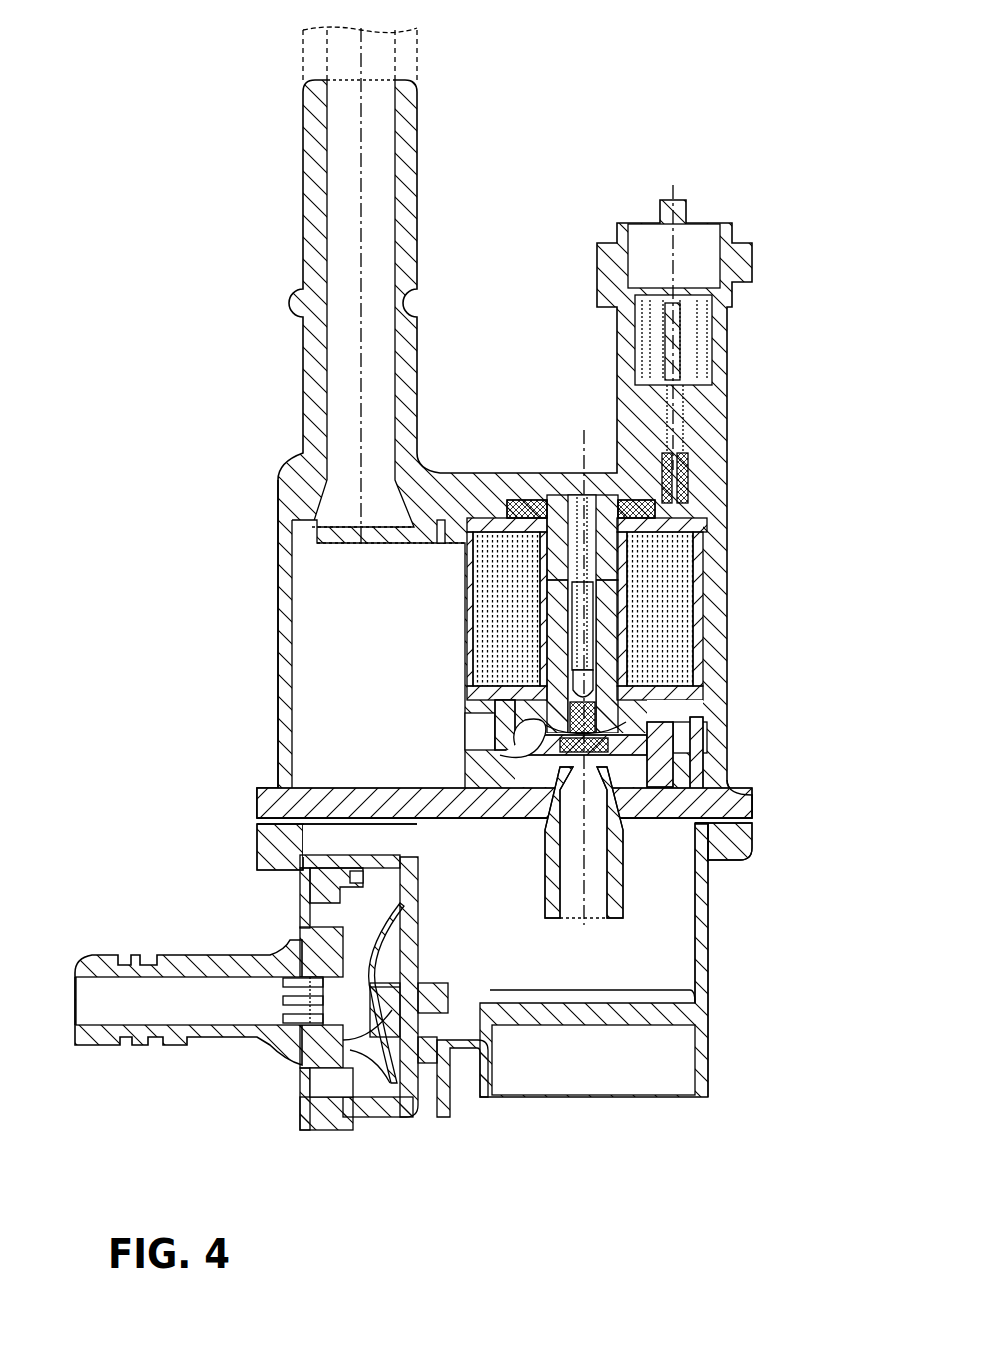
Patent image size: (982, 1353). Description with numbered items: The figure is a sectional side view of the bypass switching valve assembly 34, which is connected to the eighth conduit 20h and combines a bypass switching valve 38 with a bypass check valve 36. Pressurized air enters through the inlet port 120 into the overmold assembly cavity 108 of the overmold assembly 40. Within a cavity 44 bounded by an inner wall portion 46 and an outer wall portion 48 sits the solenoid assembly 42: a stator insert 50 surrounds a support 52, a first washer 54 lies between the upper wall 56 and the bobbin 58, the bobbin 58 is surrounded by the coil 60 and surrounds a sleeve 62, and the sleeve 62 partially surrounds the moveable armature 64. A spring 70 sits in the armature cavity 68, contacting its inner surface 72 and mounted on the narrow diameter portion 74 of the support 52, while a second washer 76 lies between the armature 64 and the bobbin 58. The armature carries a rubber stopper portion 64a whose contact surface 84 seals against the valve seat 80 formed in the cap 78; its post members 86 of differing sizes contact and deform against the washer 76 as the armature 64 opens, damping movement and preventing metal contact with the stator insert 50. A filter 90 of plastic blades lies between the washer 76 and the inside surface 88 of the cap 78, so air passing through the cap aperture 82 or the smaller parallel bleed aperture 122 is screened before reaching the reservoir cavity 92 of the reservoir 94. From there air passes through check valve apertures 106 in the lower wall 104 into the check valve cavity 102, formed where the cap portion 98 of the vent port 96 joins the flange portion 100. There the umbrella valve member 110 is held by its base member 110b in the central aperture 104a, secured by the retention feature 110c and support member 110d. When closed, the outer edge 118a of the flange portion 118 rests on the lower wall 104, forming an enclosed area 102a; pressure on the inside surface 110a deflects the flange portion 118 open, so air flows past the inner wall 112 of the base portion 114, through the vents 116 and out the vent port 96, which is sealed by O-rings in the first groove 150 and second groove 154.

The eighth conduit 20h is at (420, 42).
The bypass switching valve assembly 34 is at (172, 366).
The bypass check valve 36 is at (193, 883).
The bypass switching valve 38 is at (757, 595).
The overmold assembly 40 is at (715, 447).
The solenoid assembly 42 is at (458, 607).
The cavity 44 is at (490, 655).
The inner wall portion 46 is at (466, 573).
The outer wall portion 48 is at (680, 568).
The stator insert 50 is at (575, 492).
The support 52 is at (690, 549).
The first washer 54 is at (528, 502).
The upper wall 56 is at (527, 492).
The bobbin 58 is at (493, 515).
The coil 60 is at (708, 524).
The sleeve 62 is at (598, 500).
The armature 64 is at (612, 651).
The stopper portion 64a is at (617, 758).
The cavity 68 is at (555, 612).
The spring 70 is at (640, 701).
The inner surface 72 is at (655, 736).
The narrow diameter portion 74 is at (481, 652).
The second washer 76 is at (665, 719).
The cap 78 is at (262, 800).
The valve seat 80 is at (547, 840).
The cap aperture 82 is at (600, 832).
The contact surface 84 is at (706, 866).
The post members 86 is at (515, 722).
The inside surface 88 is at (322, 775).
The filter 90 is at (745, 809).
The reservoir cavity 92 is at (706, 986).
The reservoir 94 is at (683, 951).
The vent port 96 is at (92, 1049).
The cap portion 98 is at (322, 1134).
The flange portion 100 is at (340, 1134).
The check valve cavity 102 is at (335, 886).
The enclosed area 102a is at (418, 901).
The lower wall 104 is at (410, 954).
The central aperture 104a is at (470, 996).
The check valve apertures 106 is at (400, 936).
The overmold assembly cavity 108 is at (312, 565).
The umbrella valve member 110 is at (340, 1067).
The inside surface 110a is at (388, 1072).
The base member 110b is at (490, 1095).
The retention feature 110c is at (416, 1001).
The support member 110d is at (418, 986).
The inner wall 112 is at (302, 932).
The base portion 114 is at (300, 1052).
The vents 116 is at (283, 1019).
The flange portion 118 is at (360, 937).
The outer edge 118a is at (398, 862).
The inlet port 120 is at (413, 146).
The bleed aperture 122 is at (735, 840).
The first groove 150 is at (152, 1049).
The second groove 154 is at (125, 1049).